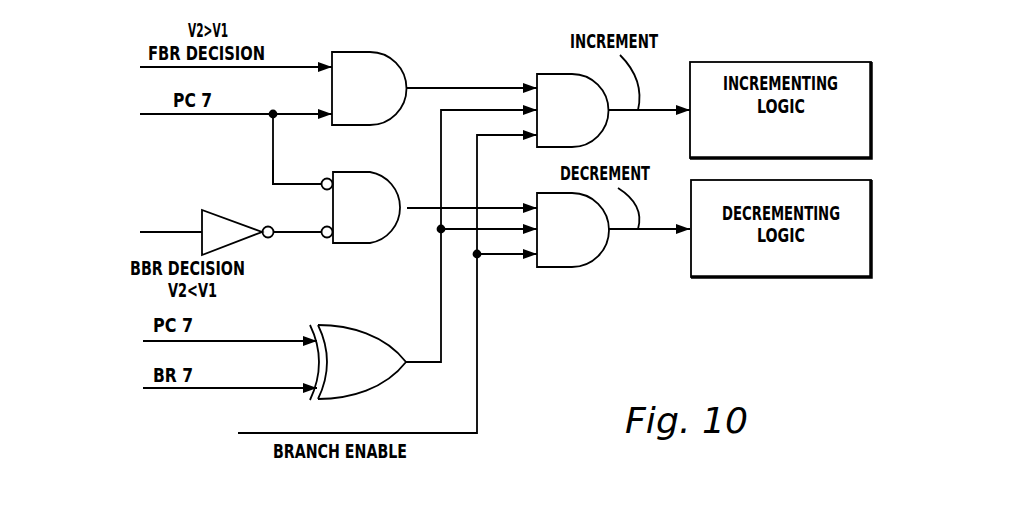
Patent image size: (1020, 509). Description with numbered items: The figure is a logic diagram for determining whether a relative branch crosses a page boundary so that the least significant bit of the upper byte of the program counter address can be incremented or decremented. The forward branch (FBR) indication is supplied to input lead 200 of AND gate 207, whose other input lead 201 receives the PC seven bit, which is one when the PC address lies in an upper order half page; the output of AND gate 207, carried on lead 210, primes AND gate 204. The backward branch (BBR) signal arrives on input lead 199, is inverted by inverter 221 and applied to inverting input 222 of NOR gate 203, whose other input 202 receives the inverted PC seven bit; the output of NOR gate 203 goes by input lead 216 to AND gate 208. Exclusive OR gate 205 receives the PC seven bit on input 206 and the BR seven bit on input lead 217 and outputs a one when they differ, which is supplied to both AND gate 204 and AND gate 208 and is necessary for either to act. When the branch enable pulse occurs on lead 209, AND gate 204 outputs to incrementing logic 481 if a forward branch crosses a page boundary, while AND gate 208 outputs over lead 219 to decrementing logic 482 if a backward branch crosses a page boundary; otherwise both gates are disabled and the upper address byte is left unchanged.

The input lead 199 is at (168, 232).
The input lead 200 is at (293, 66).
The input lead 201 is at (300, 116).
The input 202 is at (321, 186).
The NOR gate 203 is at (395, 178).
The AND gate 204 is at (537, 75).
The Exclusive OR gate 205 is at (385, 325).
The input 206 is at (268, 340).
The AND gate 207 is at (400, 62).
The AND gate 208 is at (570, 268).
The lead 209 is at (478, 380).
The output line of AND gate 207 210 is at (467, 87).
The input lead 216 is at (497, 207).
The input lead 217 is at (228, 390).
The lead 219 is at (655, 233).
The inverter 221 is at (212, 210).
The inverting input 222 is at (325, 238).
The incrementing logic 481 is at (822, 62).
The decrementing logic 482 is at (812, 278).